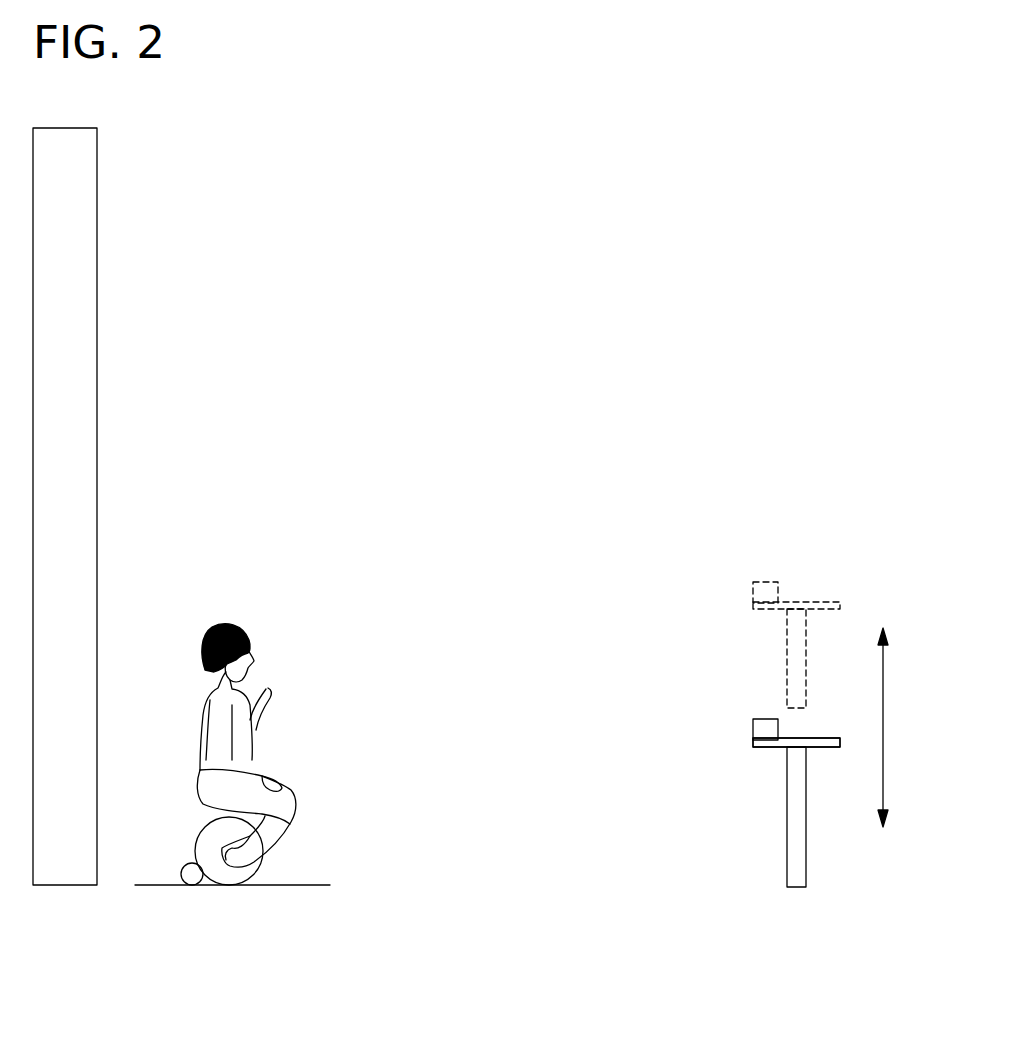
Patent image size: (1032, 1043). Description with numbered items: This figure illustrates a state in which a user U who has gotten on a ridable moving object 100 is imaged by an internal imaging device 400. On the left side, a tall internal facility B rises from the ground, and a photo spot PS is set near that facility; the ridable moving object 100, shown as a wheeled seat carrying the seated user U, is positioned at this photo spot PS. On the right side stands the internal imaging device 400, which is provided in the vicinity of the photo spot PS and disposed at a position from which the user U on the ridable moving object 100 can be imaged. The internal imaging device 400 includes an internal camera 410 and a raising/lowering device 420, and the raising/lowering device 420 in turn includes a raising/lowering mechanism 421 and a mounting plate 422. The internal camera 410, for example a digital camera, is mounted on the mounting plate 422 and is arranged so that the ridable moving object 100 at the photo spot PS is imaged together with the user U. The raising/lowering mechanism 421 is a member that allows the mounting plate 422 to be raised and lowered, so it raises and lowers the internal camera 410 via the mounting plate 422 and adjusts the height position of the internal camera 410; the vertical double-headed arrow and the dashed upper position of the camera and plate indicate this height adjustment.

The internal facility B is at (88, 472).
The user U is at (270, 688).
The photo spot PS is at (152, 885).
The ridable moving object 100 is at (263, 851).
The internal imaging device 400 is at (736, 729).
The internal camera 410 is at (780, 728).
The raising/lowering device 420 is at (711, 812).
The raising/lowering mechanism 421 is at (787, 833).
The mounting plate 422 is at (788, 748).